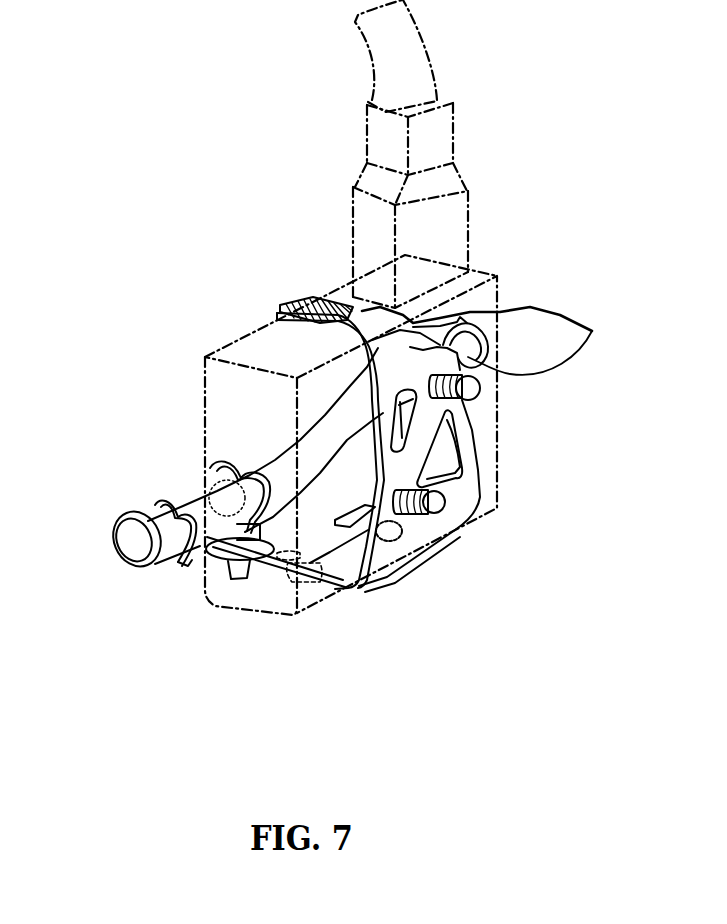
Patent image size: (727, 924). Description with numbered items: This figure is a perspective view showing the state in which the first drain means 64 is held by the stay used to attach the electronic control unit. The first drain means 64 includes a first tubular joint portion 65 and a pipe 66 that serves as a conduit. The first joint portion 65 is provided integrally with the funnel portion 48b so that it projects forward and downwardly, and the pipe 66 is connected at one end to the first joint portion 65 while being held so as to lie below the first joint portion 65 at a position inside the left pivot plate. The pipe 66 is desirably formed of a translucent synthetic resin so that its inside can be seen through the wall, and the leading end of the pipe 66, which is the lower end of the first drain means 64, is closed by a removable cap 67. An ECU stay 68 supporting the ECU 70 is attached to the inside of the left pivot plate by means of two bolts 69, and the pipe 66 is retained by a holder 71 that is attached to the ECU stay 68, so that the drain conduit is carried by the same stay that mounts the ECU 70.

The ECU 70 is at (483, 268).
The funnel portion 48b is at (563, 347).
The ECU stay 68 is at (465, 495).
The first tubular joint portion 65 is at (480, 363).
The bolts 69 is at (483, 378).
The pipe 66 is at (271, 450).
The removable cap 67 is at (153, 508).
The first drain means 64 is at (331, 425).
The holder 71 is at (232, 562).